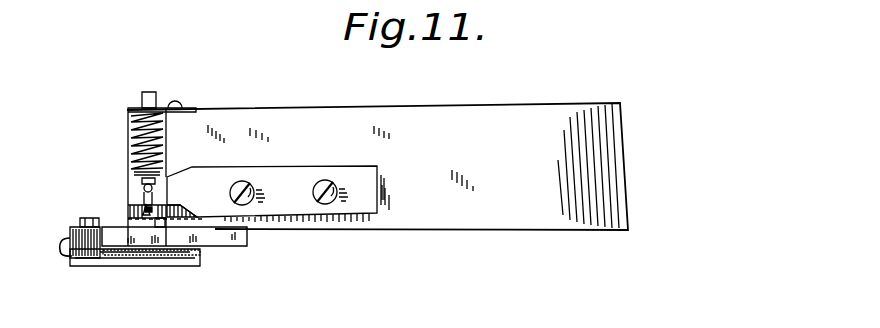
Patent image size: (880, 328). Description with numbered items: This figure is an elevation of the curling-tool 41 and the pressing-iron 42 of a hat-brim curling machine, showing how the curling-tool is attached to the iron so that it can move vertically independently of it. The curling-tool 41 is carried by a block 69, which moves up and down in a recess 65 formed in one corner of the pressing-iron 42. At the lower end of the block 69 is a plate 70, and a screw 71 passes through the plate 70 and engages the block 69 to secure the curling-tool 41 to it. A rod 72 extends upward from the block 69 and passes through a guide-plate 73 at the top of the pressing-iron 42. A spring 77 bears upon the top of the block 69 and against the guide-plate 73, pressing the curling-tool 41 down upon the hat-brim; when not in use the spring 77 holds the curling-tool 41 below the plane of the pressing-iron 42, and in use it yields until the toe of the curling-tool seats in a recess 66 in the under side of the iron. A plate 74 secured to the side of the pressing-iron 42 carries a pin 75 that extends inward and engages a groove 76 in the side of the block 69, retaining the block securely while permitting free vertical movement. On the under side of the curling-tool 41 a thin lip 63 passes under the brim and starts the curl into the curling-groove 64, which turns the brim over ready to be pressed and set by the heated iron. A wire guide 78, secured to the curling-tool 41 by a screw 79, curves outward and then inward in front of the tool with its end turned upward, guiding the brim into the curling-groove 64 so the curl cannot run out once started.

The pressing-iron 42 is at (377, 166).
The plate 74 is at (283, 174).
The screw 71 is at (166, 202).
The recess 65 is at (128, 138).
The spring 77 is at (128, 122).
The rod 72 is at (152, 94).
The guide-plate 73 is at (176, 104).
The pin 75 is at (172, 177).
The groove 76 is at (144, 190).
The block 69 is at (128, 212).
The recess 66 is at (184, 247).
The curling-tool 41 is at (172, 237).
The lip 63 is at (110, 266).
The curling-groove 64 is at (150, 262).
The screw 79 is at (85, 222).
The guide 78 is at (60, 252).
The plate 70 is at (160, 222).